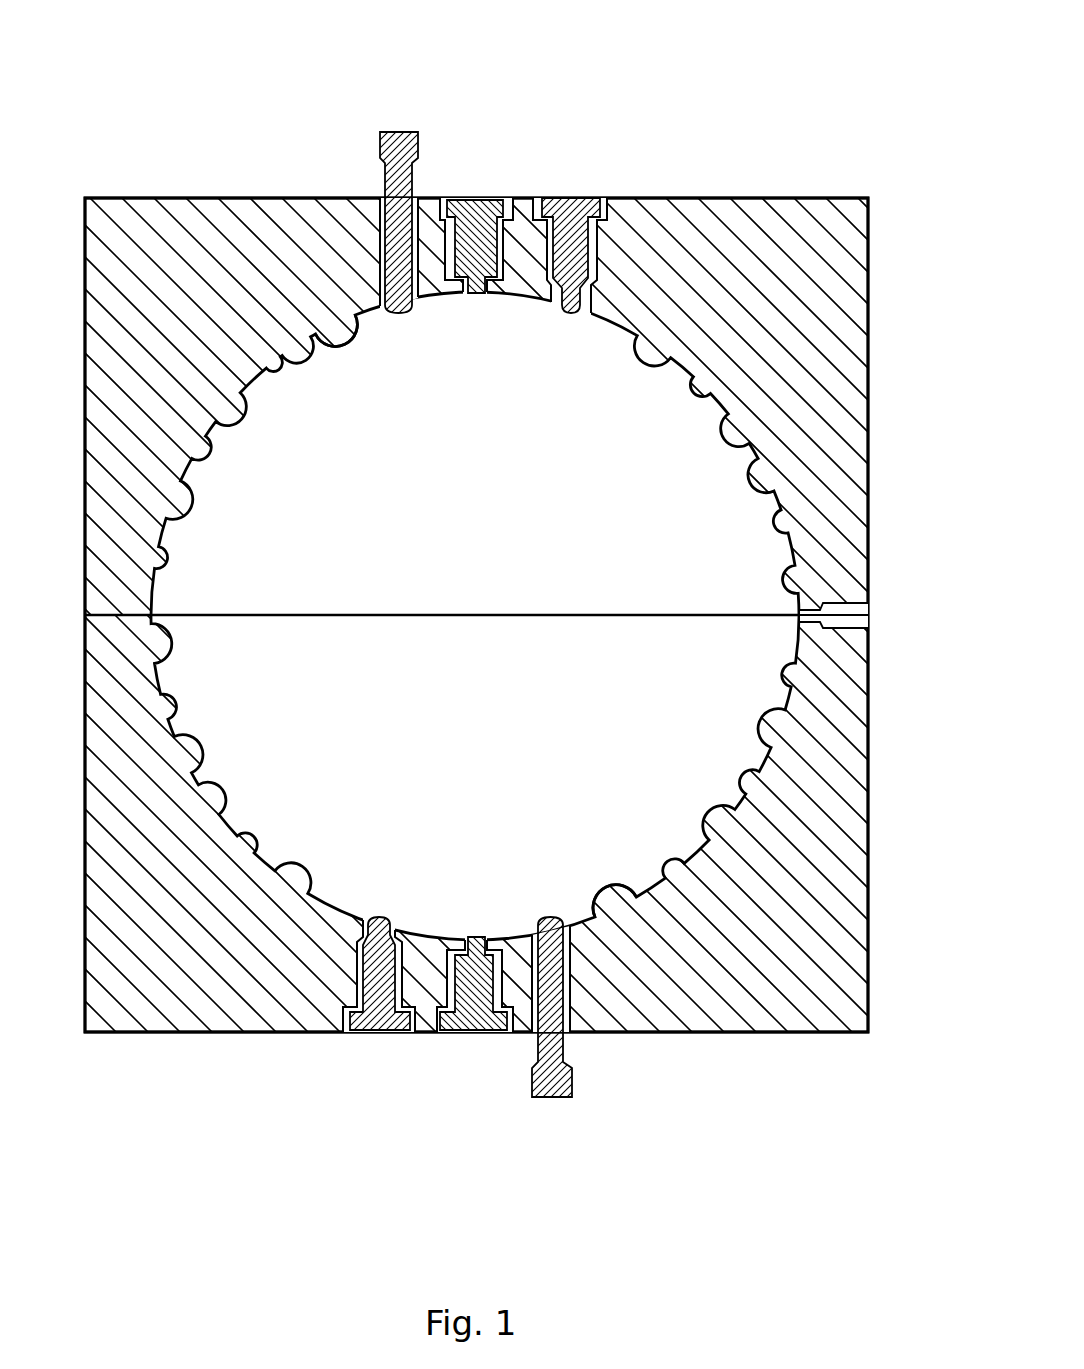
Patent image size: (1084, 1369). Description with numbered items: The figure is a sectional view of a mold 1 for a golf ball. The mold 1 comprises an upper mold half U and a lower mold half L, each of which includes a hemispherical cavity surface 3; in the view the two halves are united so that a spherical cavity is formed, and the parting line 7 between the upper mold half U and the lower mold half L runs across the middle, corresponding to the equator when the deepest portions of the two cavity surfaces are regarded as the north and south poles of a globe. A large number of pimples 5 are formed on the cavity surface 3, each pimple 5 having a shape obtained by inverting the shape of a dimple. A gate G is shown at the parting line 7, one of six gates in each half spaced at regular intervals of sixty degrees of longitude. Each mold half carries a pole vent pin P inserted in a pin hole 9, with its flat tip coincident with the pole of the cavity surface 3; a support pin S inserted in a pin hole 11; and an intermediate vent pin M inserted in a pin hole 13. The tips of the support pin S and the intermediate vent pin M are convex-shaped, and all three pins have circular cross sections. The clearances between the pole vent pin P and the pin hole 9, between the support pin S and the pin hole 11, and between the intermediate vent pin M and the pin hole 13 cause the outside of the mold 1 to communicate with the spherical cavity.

The mold 1 is at (797, 152).
The cavity surface 3 is at (718, 398).
The pimple 5 is at (297, 345).
The parting line 7 is at (758, 615).
The pin hole 9 is at (463, 205).
The pin hole 11 is at (383, 198).
The pin hole 13 is at (588, 205).
The upper mold half U is at (148, 213).
The lower mold half L is at (130, 995).
The support pin S is at (402, 132).
The pole vent pin P is at (490, 215).
The intermediate vent pin M is at (572, 225).
The gate G is at (843, 608).